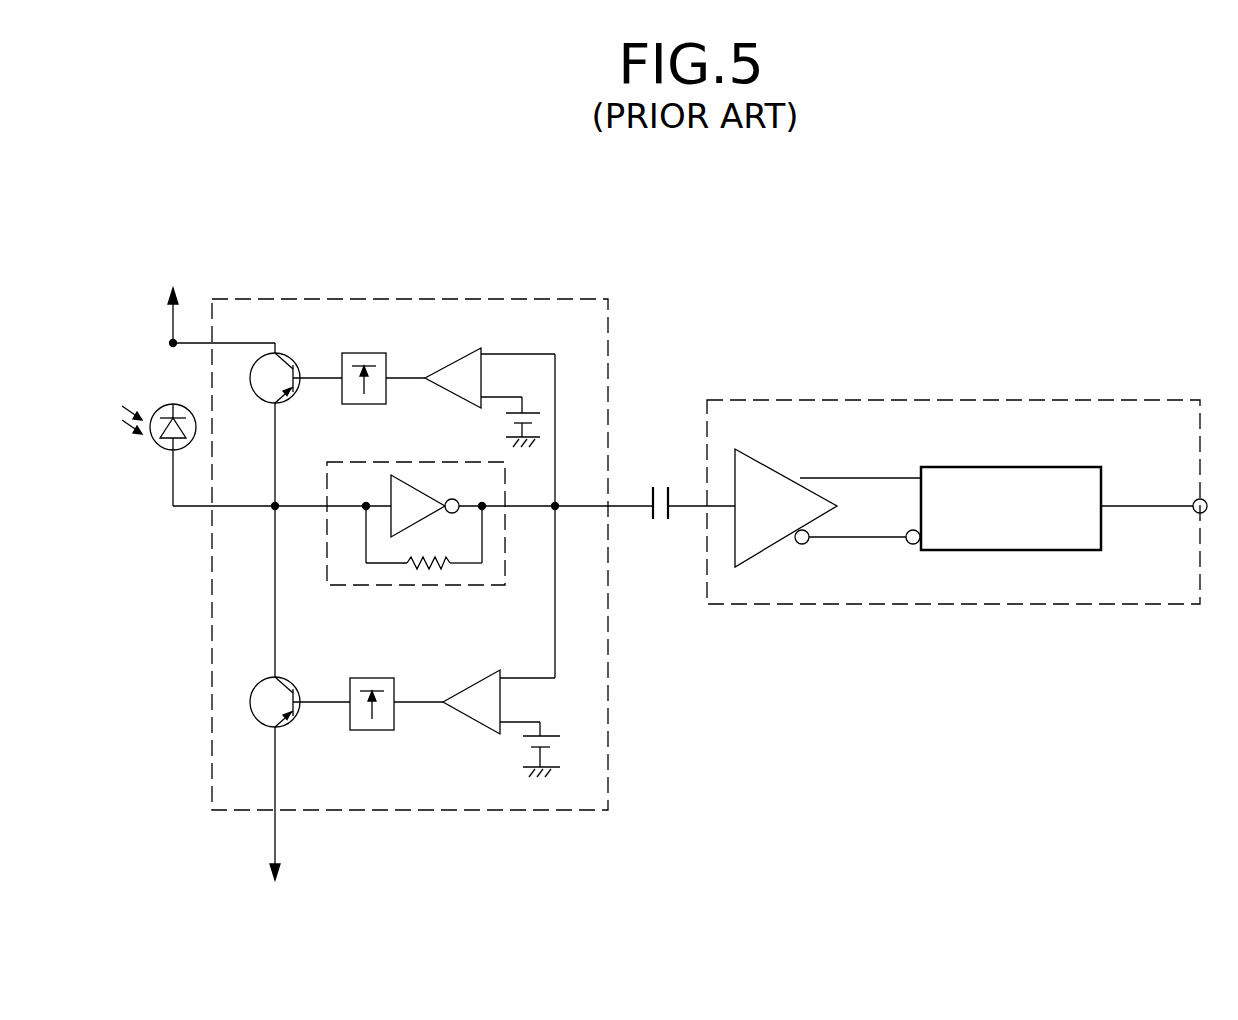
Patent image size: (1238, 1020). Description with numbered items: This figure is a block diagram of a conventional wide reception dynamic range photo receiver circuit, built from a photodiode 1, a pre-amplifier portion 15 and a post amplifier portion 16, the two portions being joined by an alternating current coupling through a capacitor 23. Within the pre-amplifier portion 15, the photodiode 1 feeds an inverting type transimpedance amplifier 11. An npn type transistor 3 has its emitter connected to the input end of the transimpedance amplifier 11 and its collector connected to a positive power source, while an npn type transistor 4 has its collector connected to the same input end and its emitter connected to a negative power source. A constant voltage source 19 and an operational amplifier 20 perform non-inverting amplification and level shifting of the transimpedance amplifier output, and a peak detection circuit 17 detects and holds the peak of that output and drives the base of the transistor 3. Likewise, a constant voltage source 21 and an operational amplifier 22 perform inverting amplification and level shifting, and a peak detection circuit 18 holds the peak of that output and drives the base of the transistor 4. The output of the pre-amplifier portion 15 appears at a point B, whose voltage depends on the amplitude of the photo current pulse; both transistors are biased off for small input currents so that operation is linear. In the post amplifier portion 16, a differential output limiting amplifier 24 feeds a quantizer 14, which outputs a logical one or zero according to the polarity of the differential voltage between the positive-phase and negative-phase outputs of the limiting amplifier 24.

The photodiode 1 is at (158, 448).
The npn type transistor 3 is at (288, 358).
The npn type transistor 4 is at (289, 680).
The inverting type transimpedance amplifier 11 is at (505, 575).
The quantizer 14 is at (1072, 467).
The pre-amplifier portion 15 is at (555, 299).
The post amplifier portion 16 is at (1003, 400).
The peak detection circuit 17 is at (366, 353).
The peak detection circuit 18 is at (372, 678).
The constant voltage source 19 is at (499, 428).
The operational amplifier 20 is at (458, 361).
The constant voltage source 21 is at (525, 743).
The operational amplifier 22 is at (468, 684).
The capacitor 23 is at (660, 478).
The differential output limiting amplifier 24 is at (776, 470).
The point B is at (558, 503).